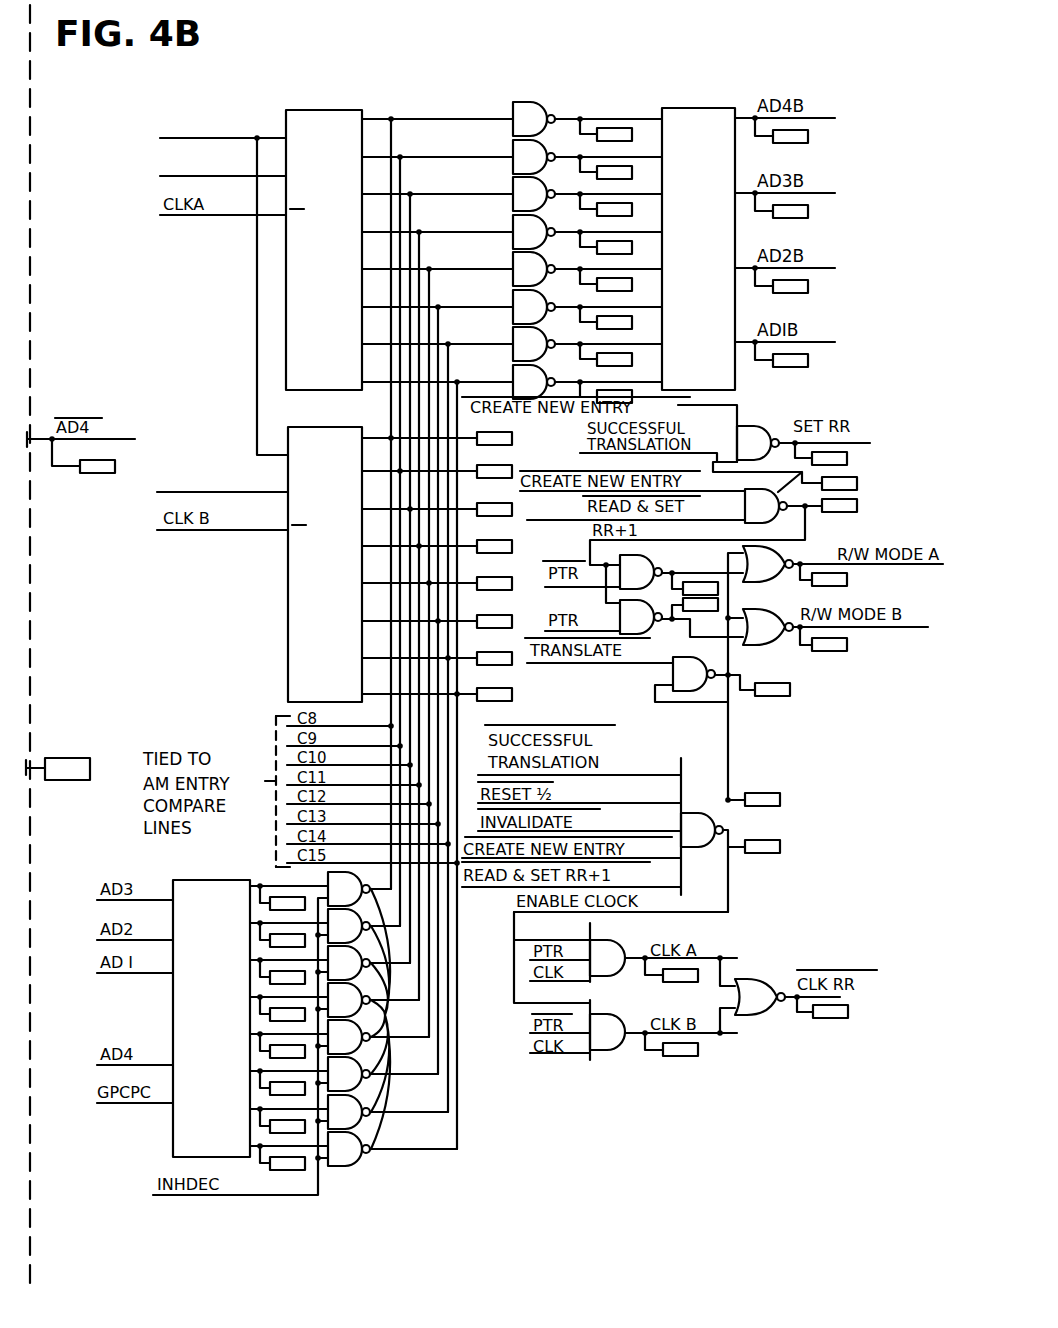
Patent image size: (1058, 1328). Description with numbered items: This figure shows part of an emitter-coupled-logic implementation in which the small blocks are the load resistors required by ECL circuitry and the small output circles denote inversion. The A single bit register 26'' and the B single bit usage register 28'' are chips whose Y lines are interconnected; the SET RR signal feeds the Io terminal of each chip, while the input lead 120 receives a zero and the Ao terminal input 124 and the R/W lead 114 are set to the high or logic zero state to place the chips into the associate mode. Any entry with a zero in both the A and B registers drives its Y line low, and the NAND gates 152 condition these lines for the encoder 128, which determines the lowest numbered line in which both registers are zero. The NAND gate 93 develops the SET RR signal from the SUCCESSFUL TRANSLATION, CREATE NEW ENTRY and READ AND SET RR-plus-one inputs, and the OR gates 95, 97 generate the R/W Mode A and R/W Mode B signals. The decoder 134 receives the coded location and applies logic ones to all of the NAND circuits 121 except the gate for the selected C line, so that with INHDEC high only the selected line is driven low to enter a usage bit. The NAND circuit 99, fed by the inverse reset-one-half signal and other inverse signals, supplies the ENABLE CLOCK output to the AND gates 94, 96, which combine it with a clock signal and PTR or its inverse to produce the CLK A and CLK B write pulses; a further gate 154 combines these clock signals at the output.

The A single bit register 26'' is at (345, 229).
The B single bit usage register 28'' is at (291, 565).
The input lead 120 is at (230, 137).
The Ao terminal input 124 is at (160, 178).
The R/W lead 114 is at (270, 491).
The NAND gates 152 is at (500, 98).
The encoder 128 is at (700, 115).
The NAND gate 93 is at (757, 437).
The OR gate 95 is at (782, 560).
The OR gate 97 is at (770, 645).
The NAND circuit 99 is at (700, 840).
The decoder 134 is at (236, 882).
The NAND circuits 121 is at (385, 1019).
The AND gate 94 is at (606, 950).
The AND gate 96 is at (605, 1020).
The CLK RR NOR gate 154 is at (760, 1014).